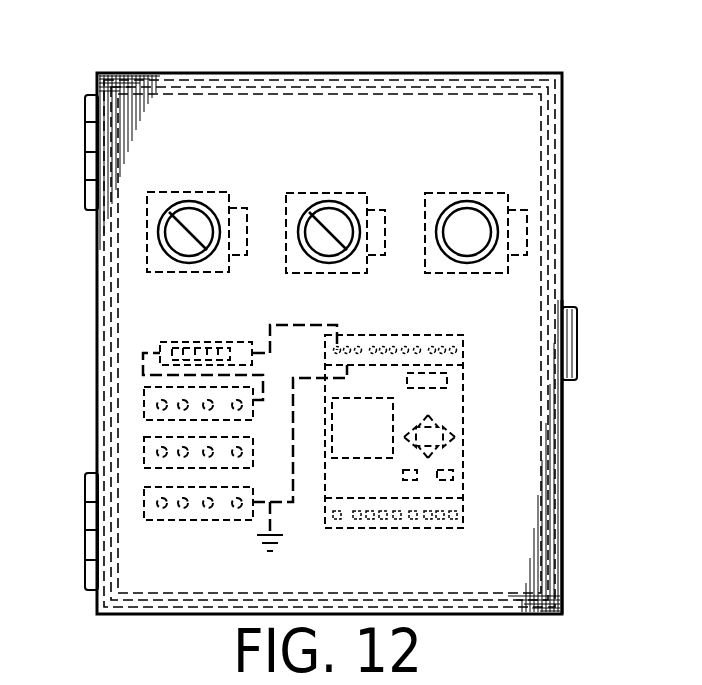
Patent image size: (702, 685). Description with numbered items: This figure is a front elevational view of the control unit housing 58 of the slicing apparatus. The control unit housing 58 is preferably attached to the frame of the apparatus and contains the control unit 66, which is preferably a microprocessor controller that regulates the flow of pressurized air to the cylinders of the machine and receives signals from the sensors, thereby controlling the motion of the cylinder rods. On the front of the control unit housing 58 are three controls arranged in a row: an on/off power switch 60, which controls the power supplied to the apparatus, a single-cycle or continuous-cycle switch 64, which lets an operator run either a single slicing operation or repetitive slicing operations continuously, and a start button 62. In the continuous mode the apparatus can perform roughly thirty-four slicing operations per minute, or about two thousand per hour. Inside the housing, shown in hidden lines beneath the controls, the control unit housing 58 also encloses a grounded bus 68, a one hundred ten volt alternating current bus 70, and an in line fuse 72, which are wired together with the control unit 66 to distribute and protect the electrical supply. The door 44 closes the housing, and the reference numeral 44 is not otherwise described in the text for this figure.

The control unit housing 58 is at (130, 66).
The door 44 is at (568, 444).
The on/off power switch 60 is at (190, 201).
The start button 62 is at (462, 201).
The single-cycle or continuous-cycle switch 64 is at (329, 201).
The control unit 66 is at (463, 460).
The grounded bus 68 is at (144, 503).
The one hundred ten volt alternating current bus 70 is at (144, 410).
The in line fuse 72 is at (201, 345).